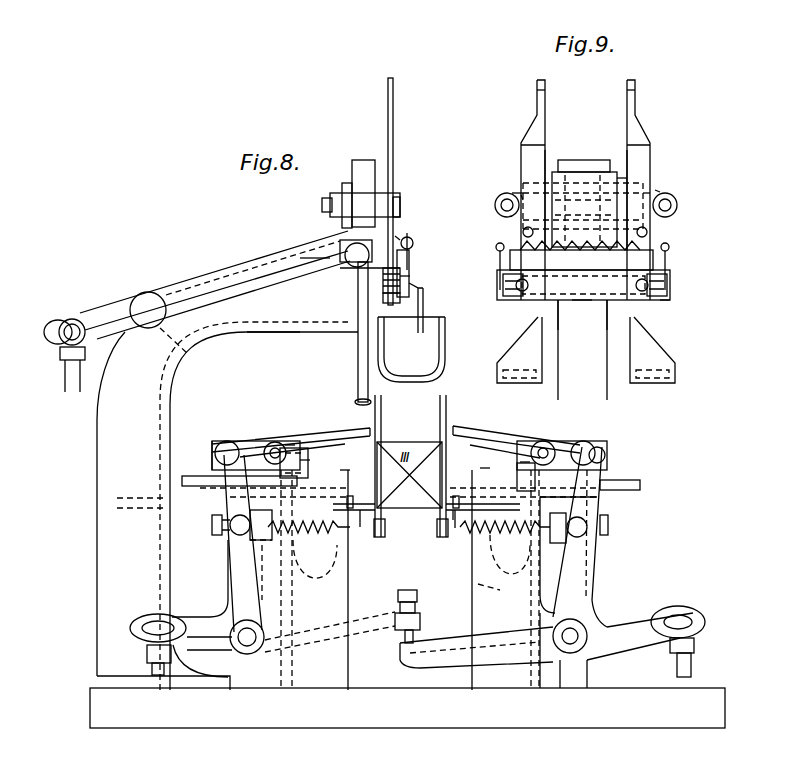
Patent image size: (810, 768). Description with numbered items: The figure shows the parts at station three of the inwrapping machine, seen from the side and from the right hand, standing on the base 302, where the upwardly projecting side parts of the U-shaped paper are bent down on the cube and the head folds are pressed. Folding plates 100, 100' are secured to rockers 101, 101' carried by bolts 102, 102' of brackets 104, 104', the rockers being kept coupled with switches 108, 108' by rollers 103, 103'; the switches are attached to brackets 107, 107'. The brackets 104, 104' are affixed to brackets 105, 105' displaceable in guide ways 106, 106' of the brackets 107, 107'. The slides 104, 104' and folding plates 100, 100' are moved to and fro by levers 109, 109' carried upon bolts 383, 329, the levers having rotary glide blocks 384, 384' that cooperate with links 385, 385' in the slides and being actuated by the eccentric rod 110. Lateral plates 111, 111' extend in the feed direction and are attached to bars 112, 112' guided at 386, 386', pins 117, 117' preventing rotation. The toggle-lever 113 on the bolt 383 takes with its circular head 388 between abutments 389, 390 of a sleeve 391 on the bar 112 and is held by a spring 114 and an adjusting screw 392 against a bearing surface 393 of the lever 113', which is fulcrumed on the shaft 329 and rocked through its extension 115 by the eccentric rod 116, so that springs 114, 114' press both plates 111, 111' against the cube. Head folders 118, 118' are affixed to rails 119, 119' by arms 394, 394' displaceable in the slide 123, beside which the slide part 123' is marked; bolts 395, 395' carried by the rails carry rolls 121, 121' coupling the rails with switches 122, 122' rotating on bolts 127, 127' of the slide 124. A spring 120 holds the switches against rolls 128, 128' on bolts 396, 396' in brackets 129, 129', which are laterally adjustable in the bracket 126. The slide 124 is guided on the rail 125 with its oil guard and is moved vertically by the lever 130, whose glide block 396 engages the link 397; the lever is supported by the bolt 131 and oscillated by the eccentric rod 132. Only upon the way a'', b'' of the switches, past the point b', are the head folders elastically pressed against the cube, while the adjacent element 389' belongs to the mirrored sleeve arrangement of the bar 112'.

In FIG. 8, the folding plate 100 is at (291, 428).
In FIG. 8, the folding plate 100' is at (516, 428).
In FIG. 8, the rocker 101 is at (304, 444).
In FIG. 8, the rocker 101' is at (505, 444).
In FIG. 8, the bolt 102 is at (302, 425).
In FIG. 8, the bolt 102' is at (542, 435).
In FIG. 8, the roller 103 is at (256, 435).
In FIG. 8, the roller 103' is at (579, 444).
In FIG. 8, the bracket 104 is at (313, 467).
In FIG. 8, the bracket 104' is at (545, 477).
In FIG. 8, the bracket 105 is at (239, 491).
In FIG. 8, the bracket 105' is at (643, 486).
In FIG. 8, the guide way 106 is at (358, 457).
In FIG. 8, the guide way 106' is at (481, 456).
In FIG. 8, the bracket 107 is at (330, 617).
In FIG. 8, the bracket 107' is at (470, 581).
In FIG. 8, the switch 108 is at (319, 454).
In FIG. 8, the switch 108' is at (515, 453).
In FIG. 8, the lever 109 is at (224, 554).
In FIG. 8, the lever 109' is at (610, 562).
In FIG. 8, the eccentric rod 110 is at (147, 660).
In FIG. 8, the lateral plate 111 is at (426, 516).
In FIG. 8, the lateral plate 111' is at (431, 534).
In FIG. 8, the bar 112 is at (355, 536).
In FIG. 8, the bar 112' is at (474, 536).
In FIG. 8, the toggle-lever 113 is at (200, 578).
In FIG. 8, the lever 113' is at (516, 650).
In FIG. 8, the spring 114 is at (309, 541).
In FIG. 8, the spring 114' is at (505, 541).
In FIG. 8, the extension 115 is at (617, 620).
In FIG. 8, the eccentric rod 116 is at (696, 652).
In FIG. 8, the pin 117 is at (351, 489).
In FIG. 8, the pin 117' is at (467, 490).
In FIG. 8, the head folder 118 is at (411, 349).
In FIG. 9, the head folder 118 is at (519, 350).
In FIG. 9, the head folder 118' is at (652, 350).
In FIG. 8, the rail 119 is at (429, 277).
In FIG. 9, the rail 119' is at (685, 316).
In FIG. 8, the spring 120 is at (421, 251).
In FIG. 9, the spring 120 is at (581, 255).
In FIG. 8, the roll 121 is at (386, 304).
In FIG. 9, the roll 121 is at (581, 306).
In FIG. 9, the roll 121' is at (679, 278).
In FIG. 8, the switch 122 is at (358, 241).
In FIG. 9, the switch 122 is at (516, 200).
In FIG. 9, the switch 122' is at (657, 195).
In FIG. 8, the slide 123 is at (422, 273).
In FIG. 9, the slide 123 is at (585, 314).
In FIG. 8, the bar 123' is at (417, 233).
In FIG. 8, the slide 124 is at (355, 266).
In FIG. 9, the slide 124 is at (618, 180).
In FIG. 8, the rail 125 is at (358, 354).
In FIG. 9, the rail 125 is at (588, 160).
In FIG. 8, the bracket 126 is at (248, 334).
In FIG. 8, the bolt 127 is at (412, 213).
In FIG. 9, the bolt 127 is at (505, 231).
In FIG. 9, the bolt 127' is at (674, 231).
In FIG. 8, the roll 128 is at (381, 195).
In FIG. 9, the roll 128 is at (490, 205).
In FIG. 9, the roll 128' is at (684, 205).
In FIG. 8, the bracket 129 is at (312, 222).
In FIG. 9, the bracket 129 is at (494, 185).
In FIG. 9, the bracket 129' is at (698, 171).
In FIG. 8, the lever 130 is at (210, 285).
In FIG. 9, the lever 130 is at (496, 247).
In FIG. 8, the bolt 131 is at (148, 310).
In FIG. 8, the eccentric rod 132 is at (68, 386).
In FIG. 8, the base 302 is at (407, 708).
In FIG. 8, the bolt 329 is at (552, 674).
In FIG. 8, the bolt 383 is at (202, 657).
In FIG. 8, the rotary glide block 384 is at (228, 435).
In FIG. 8, the rotary glide block 384' is at (631, 454).
In FIG. 8, the link 385 is at (235, 442).
In FIG. 8, the link 385' is at (581, 441).
In FIG. 8, the guide 386 is at (315, 563).
In FIG. 8, the guide 386' is at (514, 565).
In FIG. 8, the circular head 388 is at (271, 572).
In FIG. 8, the abutment 389 is at (216, 525).
In FIG. 8, the nut 389' is at (579, 528).
In FIG. 8, the abutment 390 is at (272, 549).
In FIG. 8, the sleeve 391 is at (266, 518).
In FIG. 8, the adjusting screw 392 is at (421, 602).
In FIG. 8, the bearing surface 393 is at (418, 648).
In FIG. 8, the arm 394 is at (435, 308).
In FIG. 9, the arm 394 is at (551, 318).
In FIG. 9, the arm 394' is at (598, 335).
In FIG. 8, the bolt 395 is at (422, 284).
In FIG. 9, the bolt 395 is at (503, 301).
In FIG. 9, the bolt 395' is at (681, 289).
In FIG. 8, the bolt 396 is at (307, 191).
In FIG. 9, the bolt 396 is at (501, 187).
In FIG. 9, the bolt 396' is at (678, 183).
In FIG. 8, the link 397 is at (330, 258).
In FIG. 9, the switch point a'' is at (586, 141).
In FIG. 9, the switch point b' is at (533, 98).
In FIG. 9, the switch point b'' is at (640, 98).